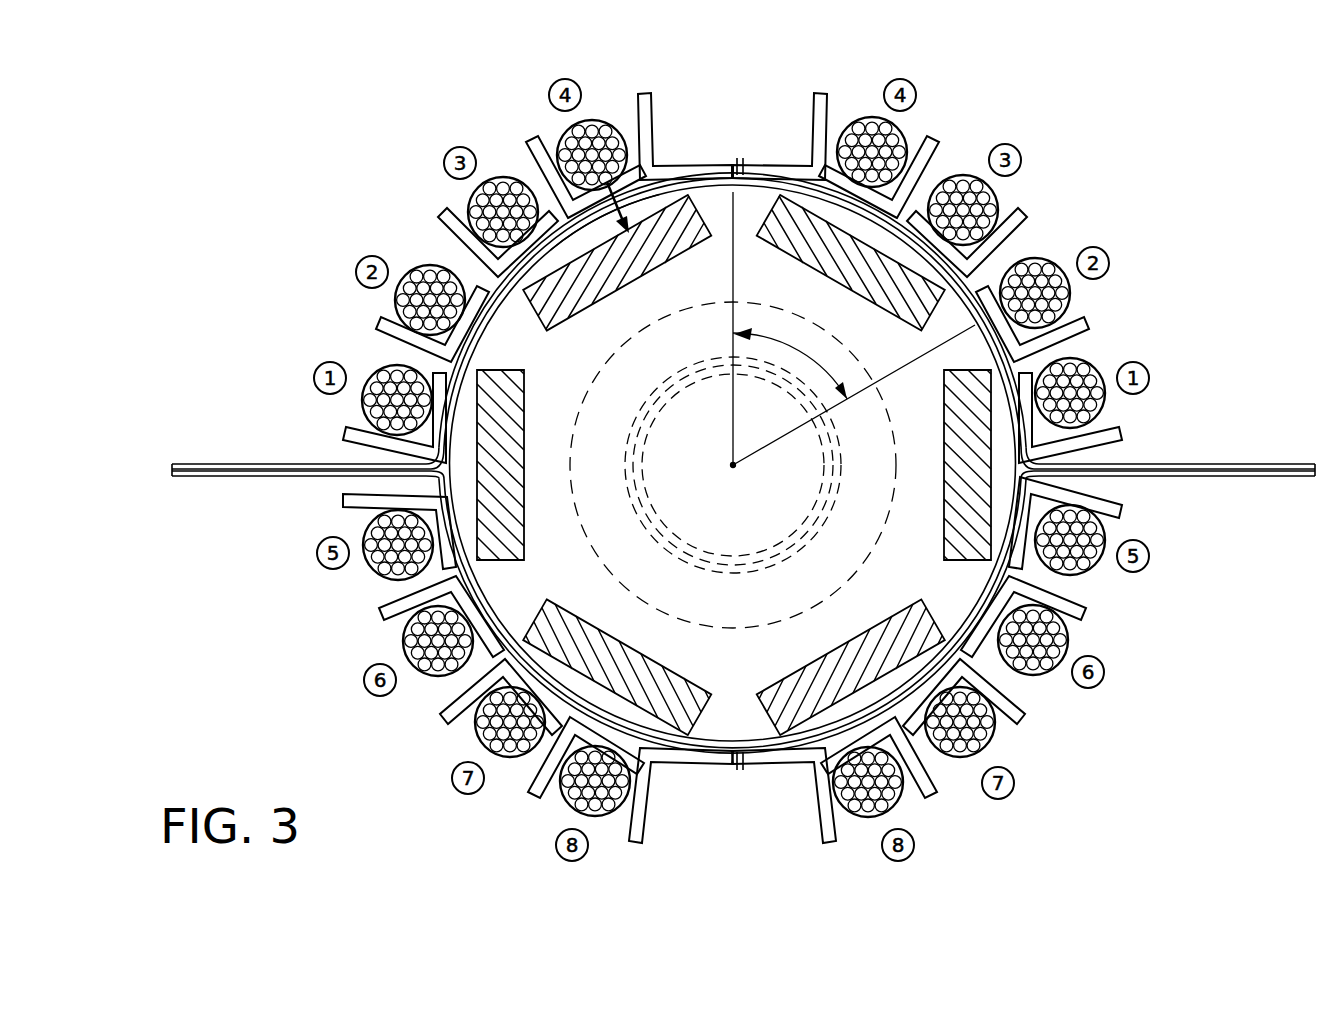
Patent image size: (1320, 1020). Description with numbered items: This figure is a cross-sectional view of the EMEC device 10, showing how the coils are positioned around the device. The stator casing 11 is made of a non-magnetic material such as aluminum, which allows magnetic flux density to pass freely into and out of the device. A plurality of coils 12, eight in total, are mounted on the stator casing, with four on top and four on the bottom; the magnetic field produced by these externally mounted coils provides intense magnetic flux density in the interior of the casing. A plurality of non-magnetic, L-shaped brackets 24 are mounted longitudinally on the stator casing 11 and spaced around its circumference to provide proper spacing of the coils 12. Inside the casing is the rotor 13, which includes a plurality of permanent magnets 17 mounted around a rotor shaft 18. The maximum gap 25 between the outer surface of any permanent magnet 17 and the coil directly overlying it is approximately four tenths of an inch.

The EMEC device 10 is at (340, 212).
The stator casing 11 is at (740, 170).
The coils 12 is at (1088, 368).
The rotor 13 is at (510, 583).
The permanent magnets 17 is at (660, 266).
The rotor shaft 18 is at (750, 514).
The L-shaped brackets 24 is at (372, 328).
The maximum gap 25 is at (650, 186).